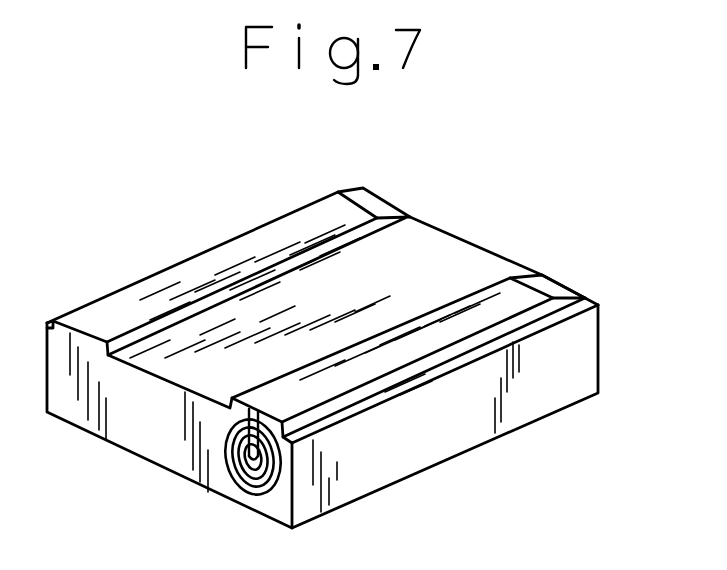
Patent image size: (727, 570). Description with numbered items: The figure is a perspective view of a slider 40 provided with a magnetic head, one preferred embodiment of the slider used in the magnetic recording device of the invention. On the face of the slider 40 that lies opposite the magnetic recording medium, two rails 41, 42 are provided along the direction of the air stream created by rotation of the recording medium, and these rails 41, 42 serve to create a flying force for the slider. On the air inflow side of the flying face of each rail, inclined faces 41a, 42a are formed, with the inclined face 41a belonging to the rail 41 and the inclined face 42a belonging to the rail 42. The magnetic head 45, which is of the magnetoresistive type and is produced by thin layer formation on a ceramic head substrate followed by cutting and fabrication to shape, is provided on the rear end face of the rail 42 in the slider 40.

The slider 40 is at (176, 242).
The rail 41 is at (296, 217).
The inclined face 41a is at (386, 198).
The rail 42 is at (494, 288).
The inclined face 42a is at (568, 284).
The magnetic head 45 is at (240, 498).